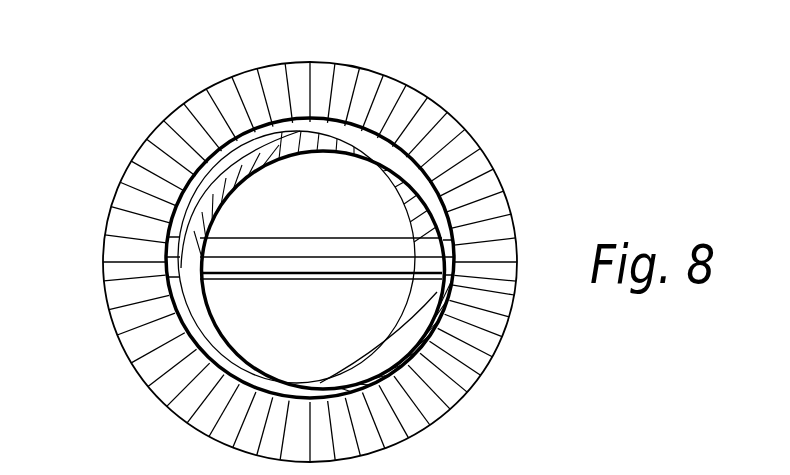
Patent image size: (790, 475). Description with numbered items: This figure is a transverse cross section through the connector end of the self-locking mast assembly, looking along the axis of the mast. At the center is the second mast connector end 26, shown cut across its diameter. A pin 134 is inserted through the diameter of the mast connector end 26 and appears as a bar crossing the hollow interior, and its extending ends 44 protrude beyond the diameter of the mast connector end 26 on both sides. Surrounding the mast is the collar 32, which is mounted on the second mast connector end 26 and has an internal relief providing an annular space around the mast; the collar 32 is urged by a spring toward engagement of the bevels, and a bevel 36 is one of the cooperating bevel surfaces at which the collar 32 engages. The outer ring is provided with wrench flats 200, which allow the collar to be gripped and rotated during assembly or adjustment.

The wrench flats 200 is at (343, 246).
The second mast connector end 26 is at (385, 133).
The bevel 36 is at (447, 151).
The collar 32 is at (506, 198).
The pin 134 is at (327, 237).
The extending ends 44 is at (180, 265).